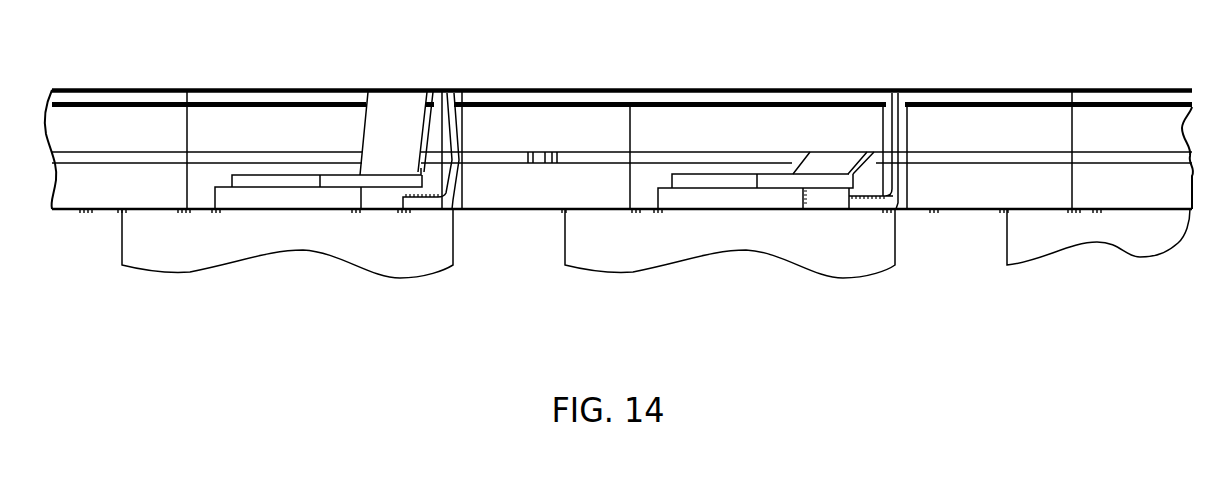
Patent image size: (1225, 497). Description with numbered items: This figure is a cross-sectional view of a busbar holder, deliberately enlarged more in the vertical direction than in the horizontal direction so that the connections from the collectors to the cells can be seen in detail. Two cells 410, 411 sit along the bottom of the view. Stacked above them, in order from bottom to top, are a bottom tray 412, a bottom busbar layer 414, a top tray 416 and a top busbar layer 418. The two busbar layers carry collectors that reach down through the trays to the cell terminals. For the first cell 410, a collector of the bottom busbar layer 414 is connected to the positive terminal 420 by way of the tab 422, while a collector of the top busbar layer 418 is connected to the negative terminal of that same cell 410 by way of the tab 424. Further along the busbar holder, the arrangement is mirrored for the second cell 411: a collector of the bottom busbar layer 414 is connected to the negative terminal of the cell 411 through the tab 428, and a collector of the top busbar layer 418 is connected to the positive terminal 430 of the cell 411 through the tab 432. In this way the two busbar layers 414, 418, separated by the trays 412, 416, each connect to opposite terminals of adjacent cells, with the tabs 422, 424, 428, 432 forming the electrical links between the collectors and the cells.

The cell 410 is at (896, 240).
The cell 411 is at (453, 240).
The bottom tray 412 is at (972, 210).
The bottom busbar layer 414 is at (975, 148).
The top tray 416 is at (1043, 100).
The top busbar layer 418 is at (997, 87).
The positive terminal 420 is at (658, 190).
The tab 422 is at (820, 188).
The tab 424 is at (862, 211).
The tab 428 is at (428, 211).
The positive terminal 430 is at (216, 197).
The tab 432 is at (382, 187).